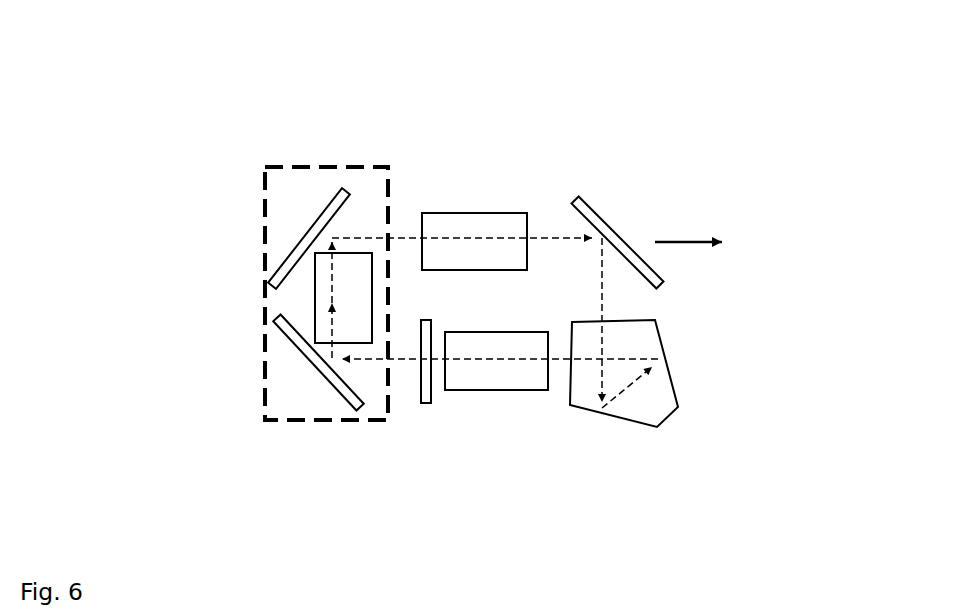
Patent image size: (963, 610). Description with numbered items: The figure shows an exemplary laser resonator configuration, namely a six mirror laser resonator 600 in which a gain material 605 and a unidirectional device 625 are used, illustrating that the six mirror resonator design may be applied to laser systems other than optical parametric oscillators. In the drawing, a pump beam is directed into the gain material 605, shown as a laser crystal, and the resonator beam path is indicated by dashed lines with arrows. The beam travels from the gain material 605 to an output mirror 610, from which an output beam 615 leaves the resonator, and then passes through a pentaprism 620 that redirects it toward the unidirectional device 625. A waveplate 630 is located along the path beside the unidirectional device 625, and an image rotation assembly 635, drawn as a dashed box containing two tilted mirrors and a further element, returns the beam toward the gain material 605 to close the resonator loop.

The six mirror laser resonator 600 is at (92, 97).
The gain material 605 is at (466, 202).
The output mirror 610 is at (710, 170).
The output beam 615 is at (707, 275).
The pentaprism 620 is at (617, 428).
The unidirectional device 625 is at (501, 405).
The waveplate 630 is at (425, 414).
The image rotation assembly 635 is at (326, 433).